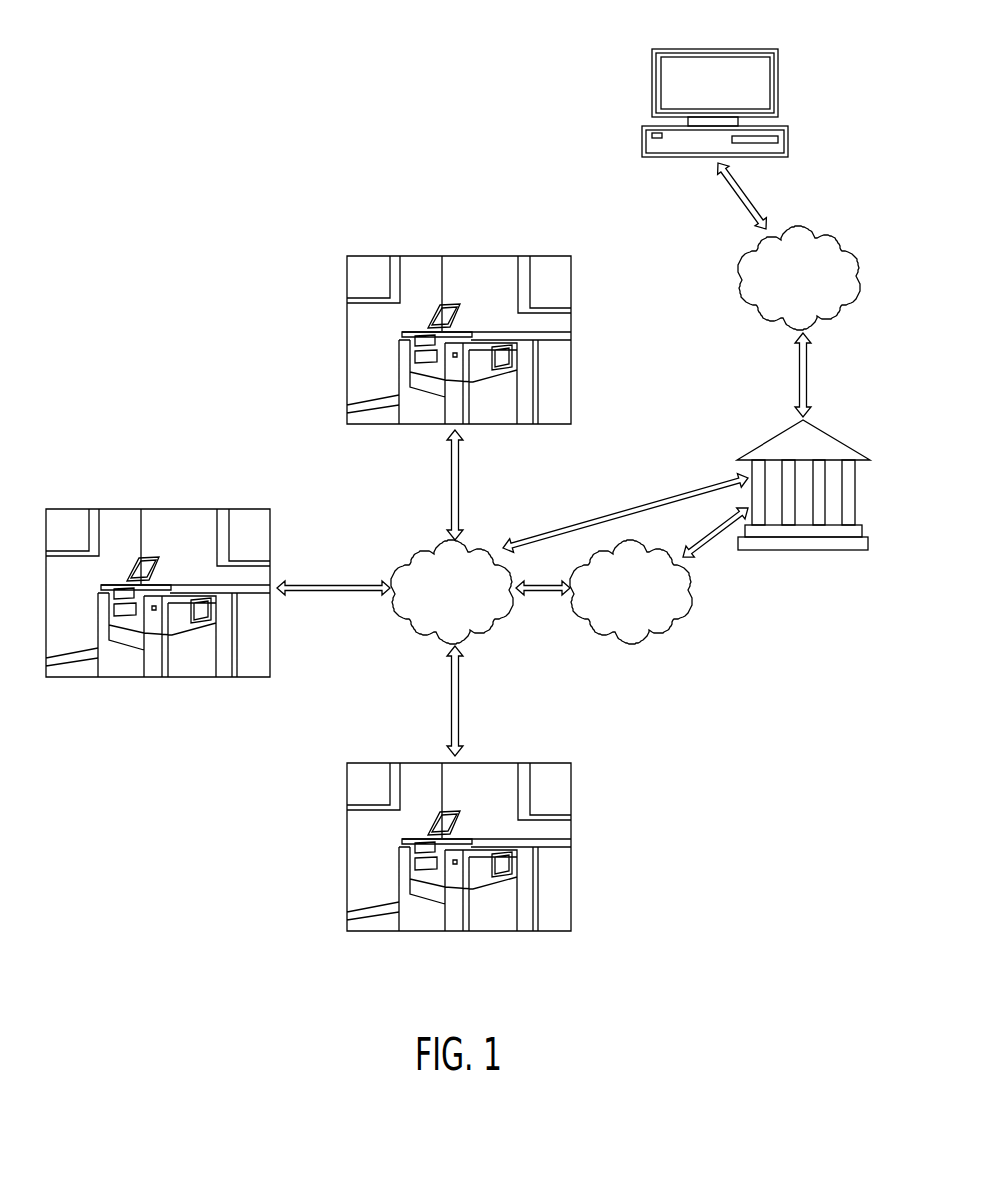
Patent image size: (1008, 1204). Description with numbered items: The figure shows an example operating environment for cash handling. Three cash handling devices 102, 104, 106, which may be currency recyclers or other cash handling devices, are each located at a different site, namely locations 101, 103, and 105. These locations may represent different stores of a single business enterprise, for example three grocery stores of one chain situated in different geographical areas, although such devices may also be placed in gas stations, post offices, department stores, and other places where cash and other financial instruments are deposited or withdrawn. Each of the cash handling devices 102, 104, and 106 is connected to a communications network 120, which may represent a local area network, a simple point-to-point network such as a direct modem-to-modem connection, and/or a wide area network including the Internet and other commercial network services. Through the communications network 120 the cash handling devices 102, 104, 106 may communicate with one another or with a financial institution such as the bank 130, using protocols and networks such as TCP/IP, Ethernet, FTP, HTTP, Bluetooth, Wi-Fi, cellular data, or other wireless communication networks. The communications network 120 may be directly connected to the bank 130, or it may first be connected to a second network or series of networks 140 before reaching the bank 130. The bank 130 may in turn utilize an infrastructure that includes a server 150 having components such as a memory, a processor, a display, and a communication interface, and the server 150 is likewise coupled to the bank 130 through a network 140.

The location 101 is at (459, 340).
The cash handling device 102 is at (455, 386).
The location 103 is at (158, 592).
The cash handling device 104 is at (157, 639).
The location 105 is at (428, 873).
The cash handling device 106 is at (457, 897).
The communications network 120 is at (490, 625).
The bank 130 is at (775, 437).
The second network or series of networks 140 is at (633, 642).
The server 150 is at (747, 48).